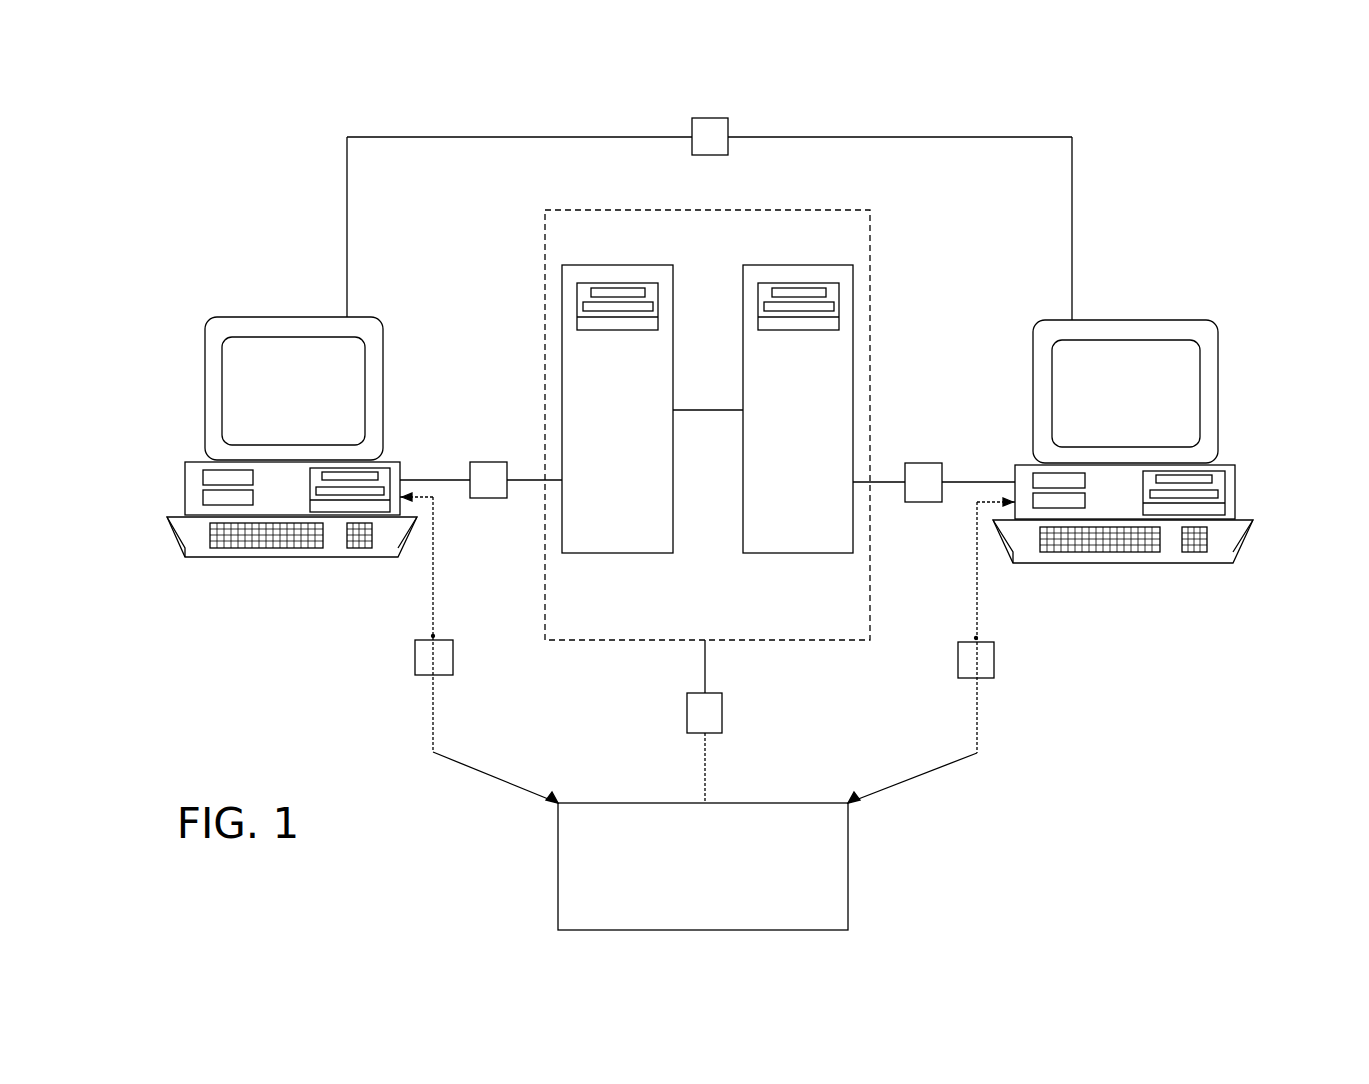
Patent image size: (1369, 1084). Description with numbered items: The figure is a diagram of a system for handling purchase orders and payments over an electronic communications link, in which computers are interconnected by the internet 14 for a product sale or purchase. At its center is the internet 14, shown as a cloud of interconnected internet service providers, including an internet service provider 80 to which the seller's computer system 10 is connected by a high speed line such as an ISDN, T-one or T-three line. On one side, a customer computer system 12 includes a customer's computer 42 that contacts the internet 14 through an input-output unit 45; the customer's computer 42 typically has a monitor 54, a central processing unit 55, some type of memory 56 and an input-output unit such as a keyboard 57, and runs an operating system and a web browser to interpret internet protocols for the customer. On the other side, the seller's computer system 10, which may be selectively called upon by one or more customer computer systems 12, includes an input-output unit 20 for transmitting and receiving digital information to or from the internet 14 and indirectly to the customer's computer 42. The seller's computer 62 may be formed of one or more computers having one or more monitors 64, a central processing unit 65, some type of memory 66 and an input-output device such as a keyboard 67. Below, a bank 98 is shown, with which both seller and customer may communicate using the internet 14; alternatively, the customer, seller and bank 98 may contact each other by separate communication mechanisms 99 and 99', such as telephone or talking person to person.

The seller's computer system 10 is at (1006, 279).
The customer computer system 12 is at (398, 284).
The internet 14 is at (707, 426).
The input-output unit 20 is at (923, 478).
The customer's computer 42 is at (268, 403).
The input-output unit 45 is at (488, 475).
The monitor 54 is at (385, 372).
The central processing unit 55 is at (210, 478).
The memory 56 is at (200, 497).
The keyboard 57 is at (195, 533).
The seller's computer 62 is at (1175, 414).
The monitors 64 is at (1218, 370).
The central processing unit 65 is at (1065, 478).
The memory 66 is at (1040, 503).
The keyboard 67 is at (1220, 543).
The internet service provider 80 is at (803, 557).
The bank 98 is at (848, 868).
The separate communication mechanism 99 is at (571, 409).
The separate communication mechanism 99' is at (1030, 661).